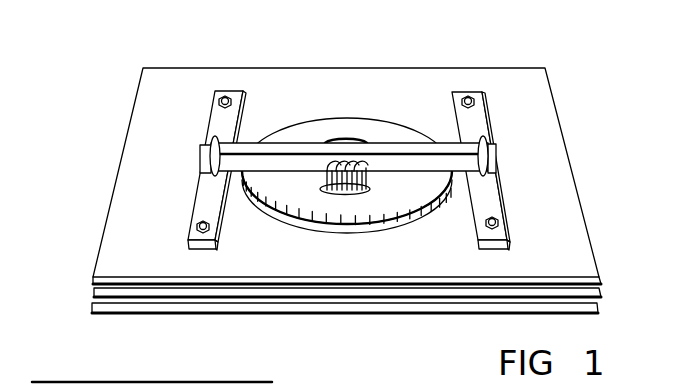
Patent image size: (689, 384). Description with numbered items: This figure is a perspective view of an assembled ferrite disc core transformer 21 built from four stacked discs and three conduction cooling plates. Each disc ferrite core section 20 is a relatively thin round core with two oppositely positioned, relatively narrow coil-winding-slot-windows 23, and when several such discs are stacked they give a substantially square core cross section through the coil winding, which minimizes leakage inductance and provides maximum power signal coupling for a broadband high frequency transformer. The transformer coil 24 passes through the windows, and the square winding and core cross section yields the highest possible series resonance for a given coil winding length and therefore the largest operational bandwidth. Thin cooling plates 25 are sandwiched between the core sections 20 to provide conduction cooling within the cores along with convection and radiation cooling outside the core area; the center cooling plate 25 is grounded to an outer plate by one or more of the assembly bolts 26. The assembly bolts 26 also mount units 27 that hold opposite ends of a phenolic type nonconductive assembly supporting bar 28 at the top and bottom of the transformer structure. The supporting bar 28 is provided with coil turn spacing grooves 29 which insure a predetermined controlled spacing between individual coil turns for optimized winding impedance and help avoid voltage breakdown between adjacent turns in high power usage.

The disc ferrite core section 20 is at (350, 128).
The transformer 21 is at (414, 61).
The coil-winding-slot-windows 23 is at (366, 192).
The transformer coil 24 is at (346, 191).
The cooling plates 25 is at (92, 308).
The assembly bolts 26 is at (218, 101).
The units 27 is at (205, 202).
The phenolic type nonconductive assembly supporting bar 28 is at (281, 146).
The coil turn spacing grooves 29 is at (322, 165).